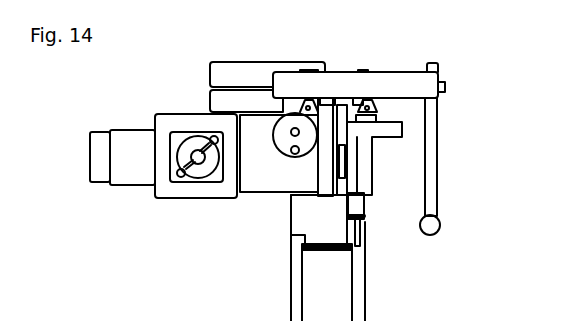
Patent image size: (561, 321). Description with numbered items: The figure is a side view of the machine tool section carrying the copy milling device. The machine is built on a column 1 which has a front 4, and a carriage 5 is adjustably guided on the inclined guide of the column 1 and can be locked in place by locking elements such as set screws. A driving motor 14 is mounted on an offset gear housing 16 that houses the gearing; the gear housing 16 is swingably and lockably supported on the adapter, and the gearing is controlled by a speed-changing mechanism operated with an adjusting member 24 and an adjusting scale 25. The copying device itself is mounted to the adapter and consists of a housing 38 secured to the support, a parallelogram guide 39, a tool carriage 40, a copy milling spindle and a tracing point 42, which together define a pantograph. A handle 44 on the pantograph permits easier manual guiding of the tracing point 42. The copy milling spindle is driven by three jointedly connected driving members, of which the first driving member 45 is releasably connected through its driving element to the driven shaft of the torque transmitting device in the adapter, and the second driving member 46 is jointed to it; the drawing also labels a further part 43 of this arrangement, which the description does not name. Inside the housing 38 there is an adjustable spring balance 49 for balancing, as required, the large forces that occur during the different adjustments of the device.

The column 1 is at (367, 272).
The front 4 is at (313, 282).
The carriage 5 is at (302, 215).
The driving motor 14 is at (123, 175).
The gear housing 16 is at (158, 197).
The adjusting member 24 is at (179, 172).
The adjusting scale 25 is at (207, 170).
The housing 38 is at (267, 177).
The parallelogram guide 39 is at (352, 162).
The tool carriage 40 is at (357, 162).
The tracing point 42 is at (363, 223).
The lever bar 43 is at (359, 66).
The handle 44 is at (442, 220).
The first driving member 45 is at (217, 102).
The driving member 46 is at (248, 70).
The adjustable spring balance 49 is at (287, 122).